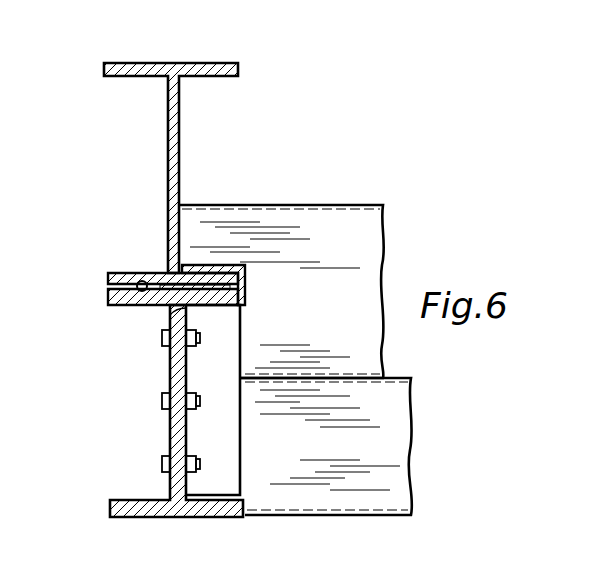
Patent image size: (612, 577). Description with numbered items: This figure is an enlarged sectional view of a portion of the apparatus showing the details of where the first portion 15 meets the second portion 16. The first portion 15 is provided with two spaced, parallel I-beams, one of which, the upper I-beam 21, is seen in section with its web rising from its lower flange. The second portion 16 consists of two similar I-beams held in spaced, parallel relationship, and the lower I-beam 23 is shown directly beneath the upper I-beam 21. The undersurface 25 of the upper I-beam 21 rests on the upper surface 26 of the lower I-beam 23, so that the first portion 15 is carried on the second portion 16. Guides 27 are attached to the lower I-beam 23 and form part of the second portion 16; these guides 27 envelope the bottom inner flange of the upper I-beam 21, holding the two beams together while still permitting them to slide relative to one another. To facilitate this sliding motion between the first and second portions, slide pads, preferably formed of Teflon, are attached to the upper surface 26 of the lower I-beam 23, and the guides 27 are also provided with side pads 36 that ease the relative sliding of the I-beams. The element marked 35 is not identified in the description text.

The first portion 15 is at (168, 162).
The I-beam 21 is at (168, 205).
The undersurface 25 is at (112, 291).
The upper surface 26 is at (142, 291).
The guides 27 is at (210, 268).
The side pads 36 is at (232, 264).
The bracket 35 is at (242, 317).
The I-beam 23 is at (170, 372).
The second portion 16 is at (170, 432).